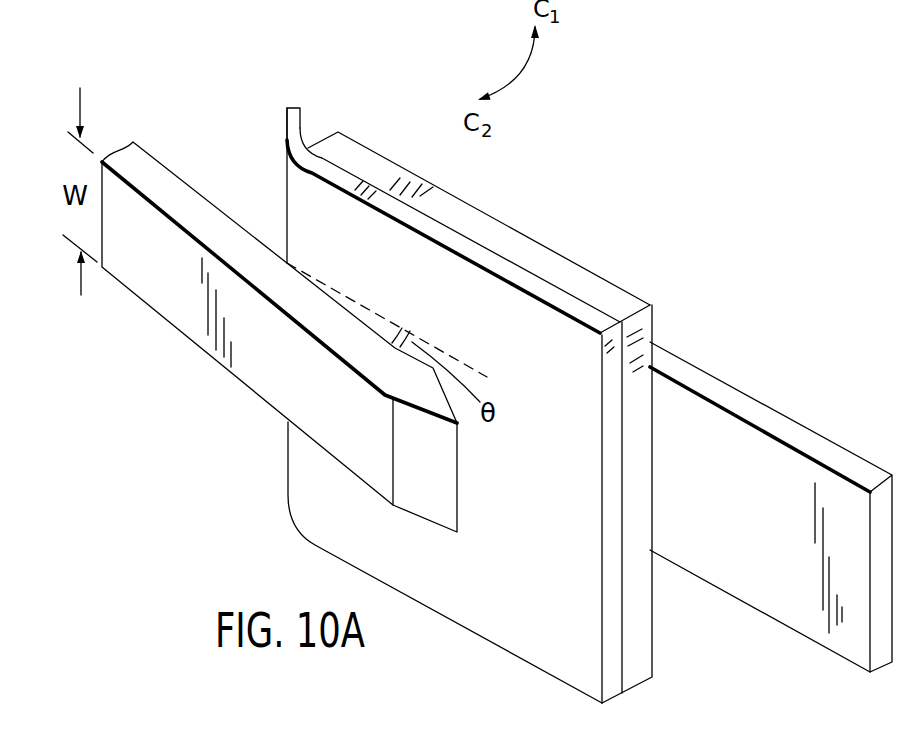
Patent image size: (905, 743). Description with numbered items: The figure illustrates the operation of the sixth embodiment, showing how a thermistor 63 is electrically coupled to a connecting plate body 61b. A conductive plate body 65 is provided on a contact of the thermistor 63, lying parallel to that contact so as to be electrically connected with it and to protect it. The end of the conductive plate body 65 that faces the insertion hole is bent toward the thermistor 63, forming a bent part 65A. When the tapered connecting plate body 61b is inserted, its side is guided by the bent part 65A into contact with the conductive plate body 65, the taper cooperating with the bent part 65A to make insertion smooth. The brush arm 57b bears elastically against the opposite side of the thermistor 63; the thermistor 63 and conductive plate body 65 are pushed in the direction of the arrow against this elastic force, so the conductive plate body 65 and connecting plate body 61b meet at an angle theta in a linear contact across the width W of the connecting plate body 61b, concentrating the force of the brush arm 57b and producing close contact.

The thermistor 63 is at (552, 263).
The conductive plate body 65 is at (353, 187).
The bent part 65A is at (295, 108).
The connecting plate body 61b is at (172, 310).
The brush arm 57b is at (708, 415).